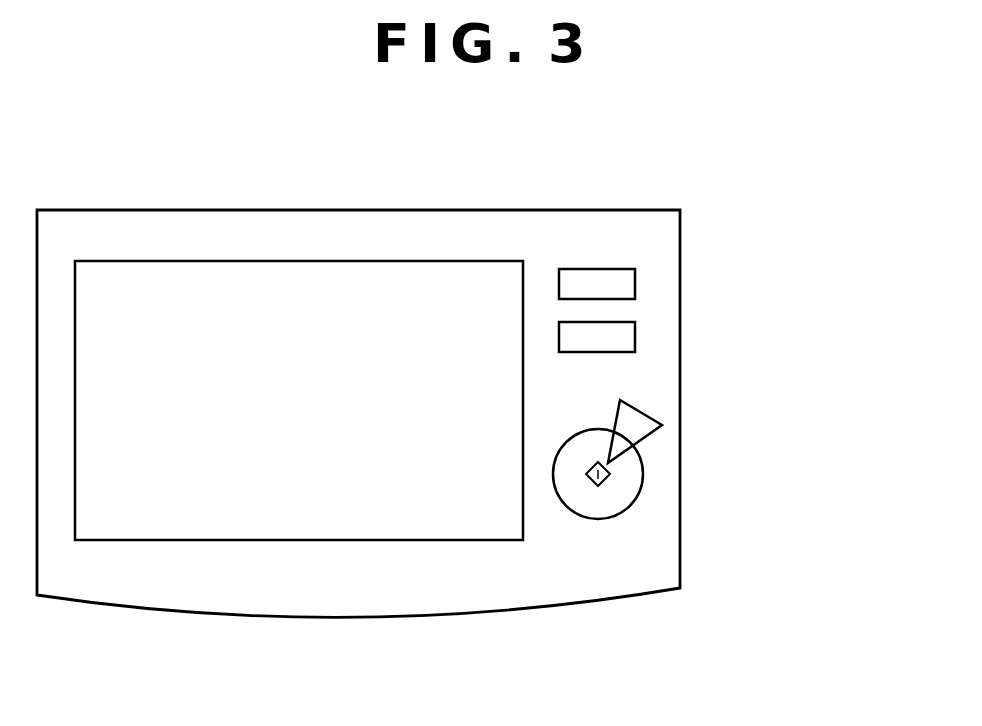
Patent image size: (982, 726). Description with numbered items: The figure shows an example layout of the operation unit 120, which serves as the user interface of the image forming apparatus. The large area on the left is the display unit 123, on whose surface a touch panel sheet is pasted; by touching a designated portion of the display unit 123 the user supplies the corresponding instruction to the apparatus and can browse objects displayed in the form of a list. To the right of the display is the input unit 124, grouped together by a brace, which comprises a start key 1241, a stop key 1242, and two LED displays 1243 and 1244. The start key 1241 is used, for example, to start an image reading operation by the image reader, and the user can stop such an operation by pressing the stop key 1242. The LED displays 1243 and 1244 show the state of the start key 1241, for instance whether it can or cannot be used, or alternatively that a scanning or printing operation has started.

The operation unit 120 is at (347, 618).
The display unit 123 is at (330, 430).
The input unit 124 is at (825, 235).
The start key 1241 is at (643, 483).
The stop key 1242 is at (640, 413).
The LED display 1243 is at (636, 336).
The LED display 1244 is at (636, 284).